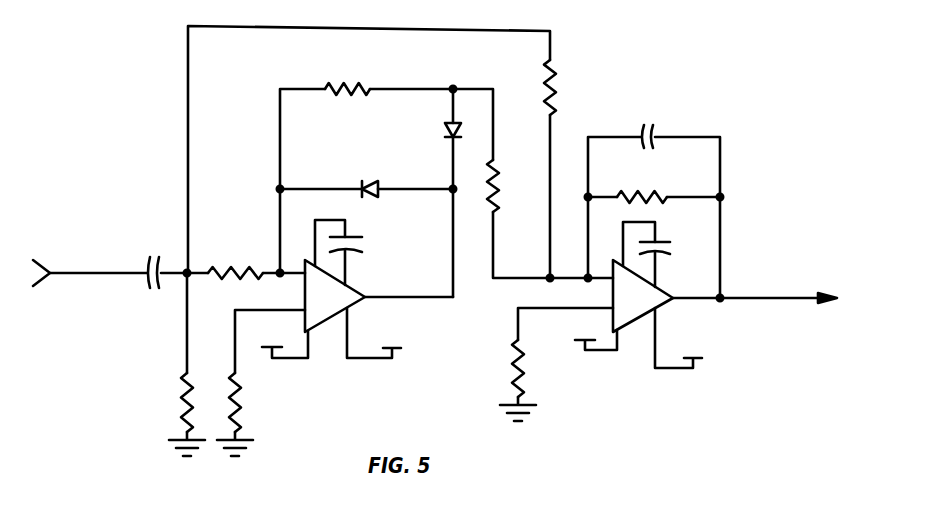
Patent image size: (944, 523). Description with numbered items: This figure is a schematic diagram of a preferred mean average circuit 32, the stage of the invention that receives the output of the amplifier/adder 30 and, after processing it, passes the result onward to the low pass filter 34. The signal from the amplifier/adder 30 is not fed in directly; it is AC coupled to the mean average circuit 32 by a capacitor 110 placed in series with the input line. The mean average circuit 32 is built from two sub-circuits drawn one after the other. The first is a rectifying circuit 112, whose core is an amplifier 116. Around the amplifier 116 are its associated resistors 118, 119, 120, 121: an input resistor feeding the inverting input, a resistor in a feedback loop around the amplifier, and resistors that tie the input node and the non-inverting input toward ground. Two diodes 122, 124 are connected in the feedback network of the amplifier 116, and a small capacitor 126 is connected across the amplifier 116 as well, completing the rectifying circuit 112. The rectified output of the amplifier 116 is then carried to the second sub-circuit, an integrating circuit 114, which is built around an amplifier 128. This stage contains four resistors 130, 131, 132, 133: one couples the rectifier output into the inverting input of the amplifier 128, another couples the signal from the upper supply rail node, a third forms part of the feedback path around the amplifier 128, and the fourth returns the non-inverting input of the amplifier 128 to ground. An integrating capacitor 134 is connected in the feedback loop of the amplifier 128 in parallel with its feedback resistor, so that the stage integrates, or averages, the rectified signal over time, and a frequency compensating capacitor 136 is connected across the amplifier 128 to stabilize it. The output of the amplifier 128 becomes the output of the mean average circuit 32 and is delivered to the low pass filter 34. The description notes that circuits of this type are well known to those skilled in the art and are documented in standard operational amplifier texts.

The amplifier/adder 30 is at (88, 307).
The mean average circuit 32 is at (705, 91).
The low pass filter 34 is at (755, 353).
The capacitor 110 is at (141, 256).
The rectifying circuit 112 is at (289, 418).
The integrating circuit 114 is at (593, 392).
The amplifier 116 is at (333, 302).
The resistor 118 is at (231, 266).
The resistor 119 is at (248, 404).
The resistor 120 is at (355, 82).
The resistor 121 is at (178, 393).
The diode 122 is at (372, 181).
The diode 124 is at (447, 131).
The capacitor 126 is at (364, 231).
The amplifier 128 is at (646, 306).
The resistor 130 is at (505, 369).
The resistor 131 is at (640, 183).
The resistor 132 is at (580, 77).
The resistor 133 is at (502, 172).
The integrating capacitor 134 is at (637, 128).
The frequency compensating capacitor 136 is at (668, 240).